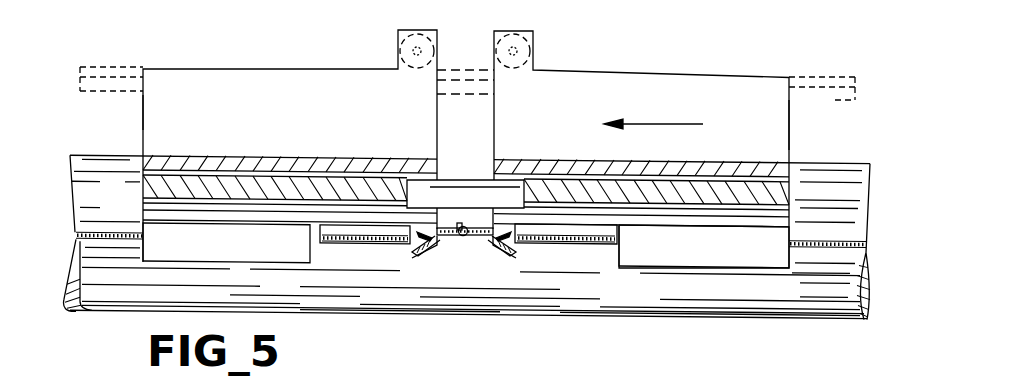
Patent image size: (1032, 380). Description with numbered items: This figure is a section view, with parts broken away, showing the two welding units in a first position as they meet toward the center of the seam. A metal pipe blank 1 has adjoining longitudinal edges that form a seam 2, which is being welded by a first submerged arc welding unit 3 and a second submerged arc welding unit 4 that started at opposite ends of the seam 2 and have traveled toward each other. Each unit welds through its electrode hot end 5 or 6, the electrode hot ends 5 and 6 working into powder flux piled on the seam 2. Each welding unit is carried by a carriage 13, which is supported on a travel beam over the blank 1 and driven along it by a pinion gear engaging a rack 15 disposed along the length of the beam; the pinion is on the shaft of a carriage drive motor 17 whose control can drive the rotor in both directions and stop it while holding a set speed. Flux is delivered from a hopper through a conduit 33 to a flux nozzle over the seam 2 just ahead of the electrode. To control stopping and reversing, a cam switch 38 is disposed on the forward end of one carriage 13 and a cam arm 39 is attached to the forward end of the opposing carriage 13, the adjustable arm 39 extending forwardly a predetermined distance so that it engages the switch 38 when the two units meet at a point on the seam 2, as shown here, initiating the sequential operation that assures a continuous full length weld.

The metal pipe blank 1 is at (381, 321).
The seam 2 is at (465, 242).
The first submerged arc welding unit 3 is at (348, 66).
The second submerged arc welding unit 4 is at (604, 70).
The electrode hot end 5 is at (433, 234).
The electrode hot end 6 is at (495, 234).
The carriage 13 is at (152, 110).
The rack 15 is at (94, 92).
The carriage drive motor 17 is at (398, 47).
The conduit 33 is at (430, 252).
The cam switch 38 is at (457, 226).
The cam arm 39 is at (471, 229).